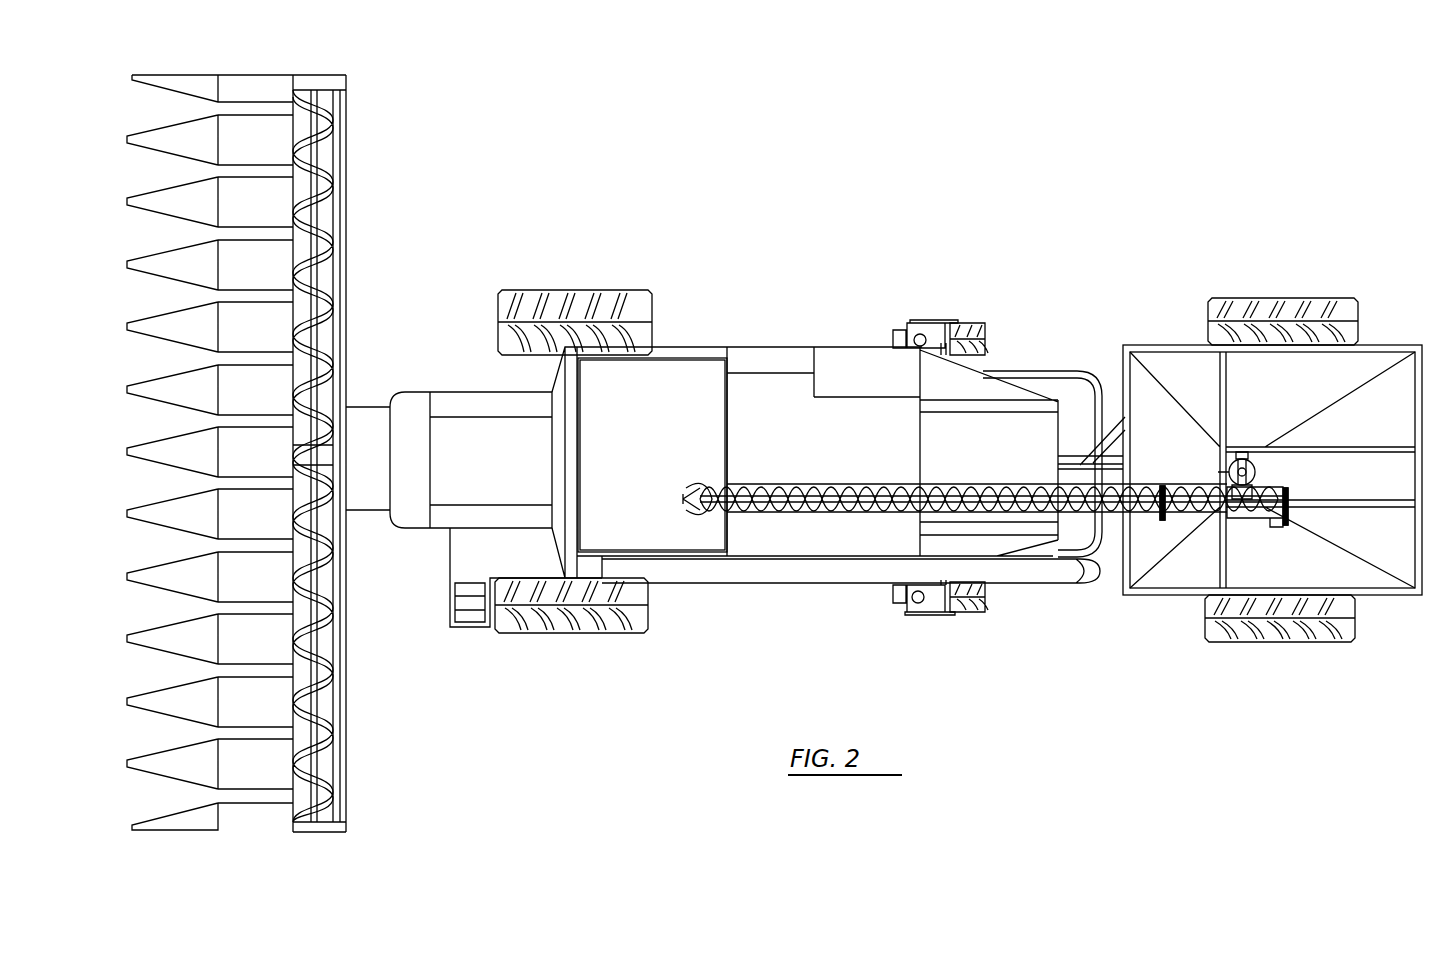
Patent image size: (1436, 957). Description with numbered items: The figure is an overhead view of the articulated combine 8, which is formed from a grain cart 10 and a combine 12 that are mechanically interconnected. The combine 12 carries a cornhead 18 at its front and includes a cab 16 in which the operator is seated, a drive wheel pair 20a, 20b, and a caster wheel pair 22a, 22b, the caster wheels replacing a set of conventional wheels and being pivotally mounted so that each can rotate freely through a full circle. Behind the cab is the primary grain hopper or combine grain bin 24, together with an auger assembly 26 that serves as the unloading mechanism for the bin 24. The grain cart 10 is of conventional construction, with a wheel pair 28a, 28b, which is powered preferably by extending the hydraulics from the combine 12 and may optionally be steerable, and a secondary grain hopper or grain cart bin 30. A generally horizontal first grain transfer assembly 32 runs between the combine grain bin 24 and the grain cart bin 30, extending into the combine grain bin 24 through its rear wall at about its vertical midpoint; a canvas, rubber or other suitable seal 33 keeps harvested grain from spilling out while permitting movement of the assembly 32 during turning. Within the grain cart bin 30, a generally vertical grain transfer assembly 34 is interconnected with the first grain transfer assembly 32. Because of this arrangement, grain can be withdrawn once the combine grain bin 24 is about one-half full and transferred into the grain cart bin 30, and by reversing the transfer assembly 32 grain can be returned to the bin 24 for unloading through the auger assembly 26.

The articulated combine 8 is at (953, 240).
The grain cart 10 is at (1185, 294).
The combine 12 is at (683, 264).
The cab 16 is at (455, 400).
The cornhead 18 is at (268, 75).
The drive wheel 20a is at (575, 620).
The drive wheel 20b is at (570, 305).
The caster wheel 22a is at (958, 612).
The caster wheel 22b is at (970, 327).
The combine grain bin 24 is at (697, 358).
The auger assembly 26 is at (1025, 580).
The wheel 28a is at (1268, 628).
The wheel 28b is at (1295, 312).
The grain cart bin 30 is at (1385, 598).
The first grain transfer assembly 32 is at (787, 483).
The seal 33 is at (712, 480).
The vertical grain transfer assembly 34 is at (1243, 457).